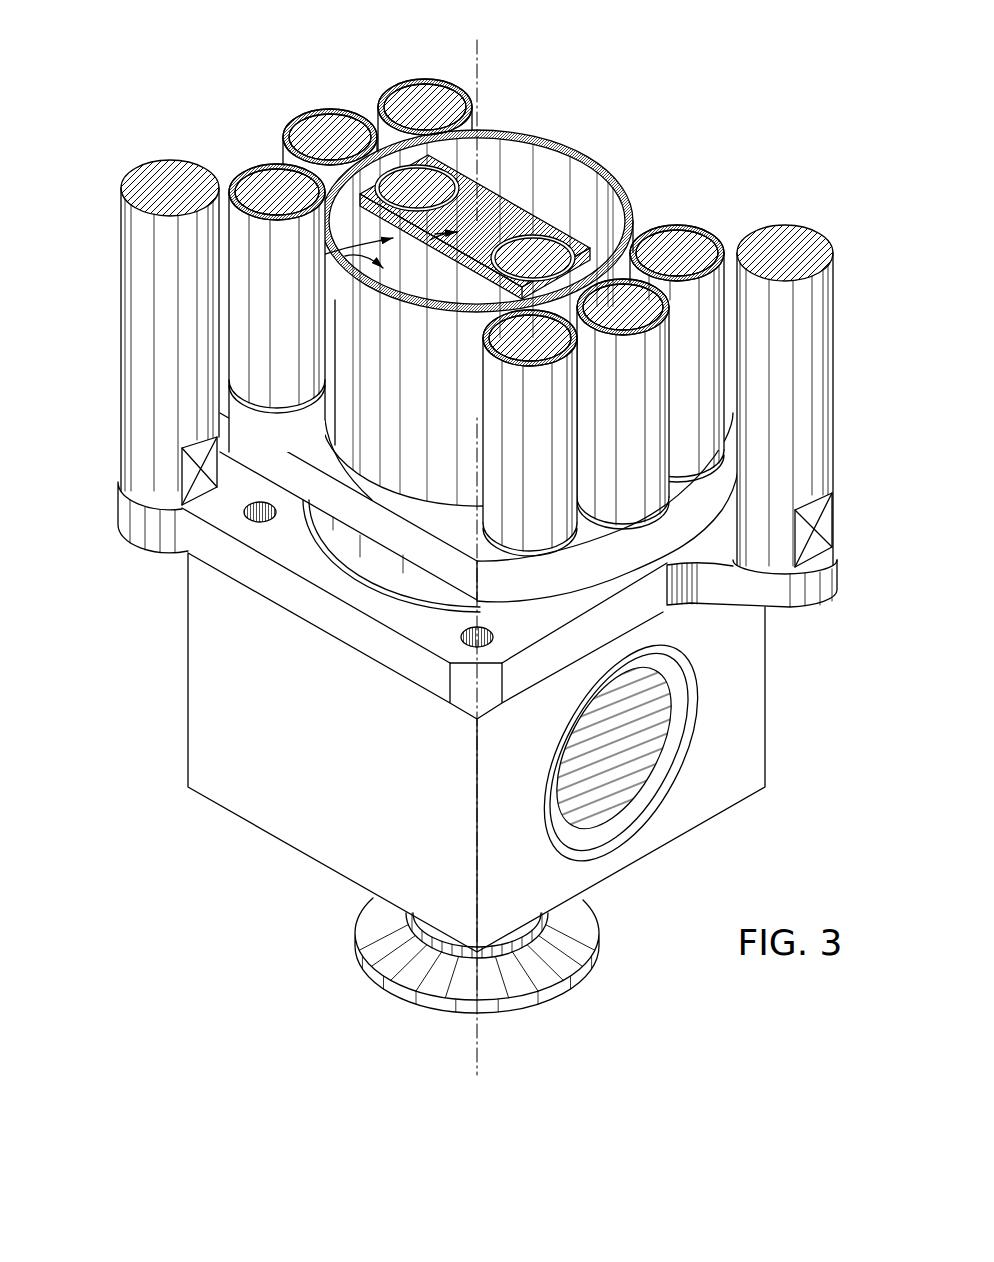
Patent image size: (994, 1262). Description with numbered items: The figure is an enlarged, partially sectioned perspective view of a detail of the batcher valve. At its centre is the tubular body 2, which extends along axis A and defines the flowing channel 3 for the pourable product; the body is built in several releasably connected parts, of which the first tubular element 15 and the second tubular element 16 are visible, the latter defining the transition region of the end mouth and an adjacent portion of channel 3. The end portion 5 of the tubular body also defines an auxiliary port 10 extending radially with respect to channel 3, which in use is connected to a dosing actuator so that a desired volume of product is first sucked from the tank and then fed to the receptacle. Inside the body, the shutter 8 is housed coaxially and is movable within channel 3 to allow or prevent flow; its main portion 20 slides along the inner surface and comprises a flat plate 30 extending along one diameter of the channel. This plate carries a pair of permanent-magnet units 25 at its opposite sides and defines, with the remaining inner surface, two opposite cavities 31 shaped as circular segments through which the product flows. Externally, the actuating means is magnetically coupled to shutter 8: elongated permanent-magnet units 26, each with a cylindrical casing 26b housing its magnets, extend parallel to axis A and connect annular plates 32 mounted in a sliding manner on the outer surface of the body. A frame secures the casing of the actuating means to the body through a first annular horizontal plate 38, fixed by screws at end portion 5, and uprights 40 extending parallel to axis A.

The tubular body 2 is at (505, 125).
The flowing channel 3 is at (488, 160).
The end portion 5 is at (403, 907).
The shutter 8 is at (373, 255).
The auxiliary port 10 is at (630, 758).
The first tubular element 15 is at (578, 952).
The second tubular element 16 is at (283, 830).
The main portion 20 is at (430, 240).
The permanent-magnet unit 25 is at (405, 180).
The permanent-magnet unit 26 is at (242, 163).
The cylindrical casing 26b is at (268, 165).
The flat plate 30 is at (512, 215).
The cavity 31 is at (512, 170).
The annular plate 32 is at (612, 557).
The first annular horizontal plate 38 is at (797, 595).
The upright 40 is at (150, 250).
The axis A is at (480, 1045).